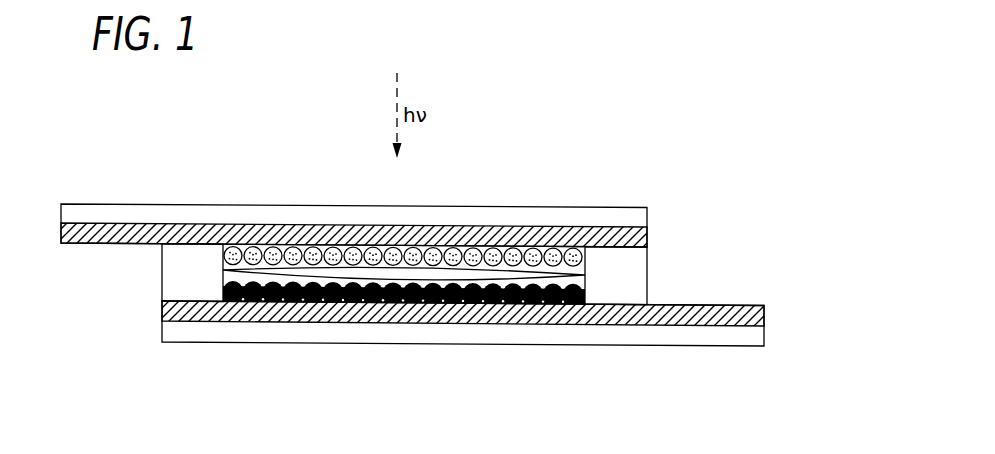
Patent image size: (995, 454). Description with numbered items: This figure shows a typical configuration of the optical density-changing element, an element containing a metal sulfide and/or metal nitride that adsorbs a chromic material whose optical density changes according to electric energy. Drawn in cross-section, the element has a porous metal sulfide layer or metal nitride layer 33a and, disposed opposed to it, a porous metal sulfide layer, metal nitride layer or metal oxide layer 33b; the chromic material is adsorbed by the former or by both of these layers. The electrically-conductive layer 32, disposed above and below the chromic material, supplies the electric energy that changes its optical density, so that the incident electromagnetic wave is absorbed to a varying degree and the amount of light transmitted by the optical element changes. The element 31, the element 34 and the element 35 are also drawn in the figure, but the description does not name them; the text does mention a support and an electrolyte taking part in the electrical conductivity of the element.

The upper transparent substrate 31 is at (118, 209).
The electrically-conductive layer 32 is at (504, 224).
The porous metal sulfide layer or metal nitride layer 33a is at (356, 245).
The porous metal sulfide layer, metal nitride layer or metal oxide layer 33b is at (395, 305).
The electrolyte layer 34 is at (295, 267).
The spacer 35 is at (159, 279).